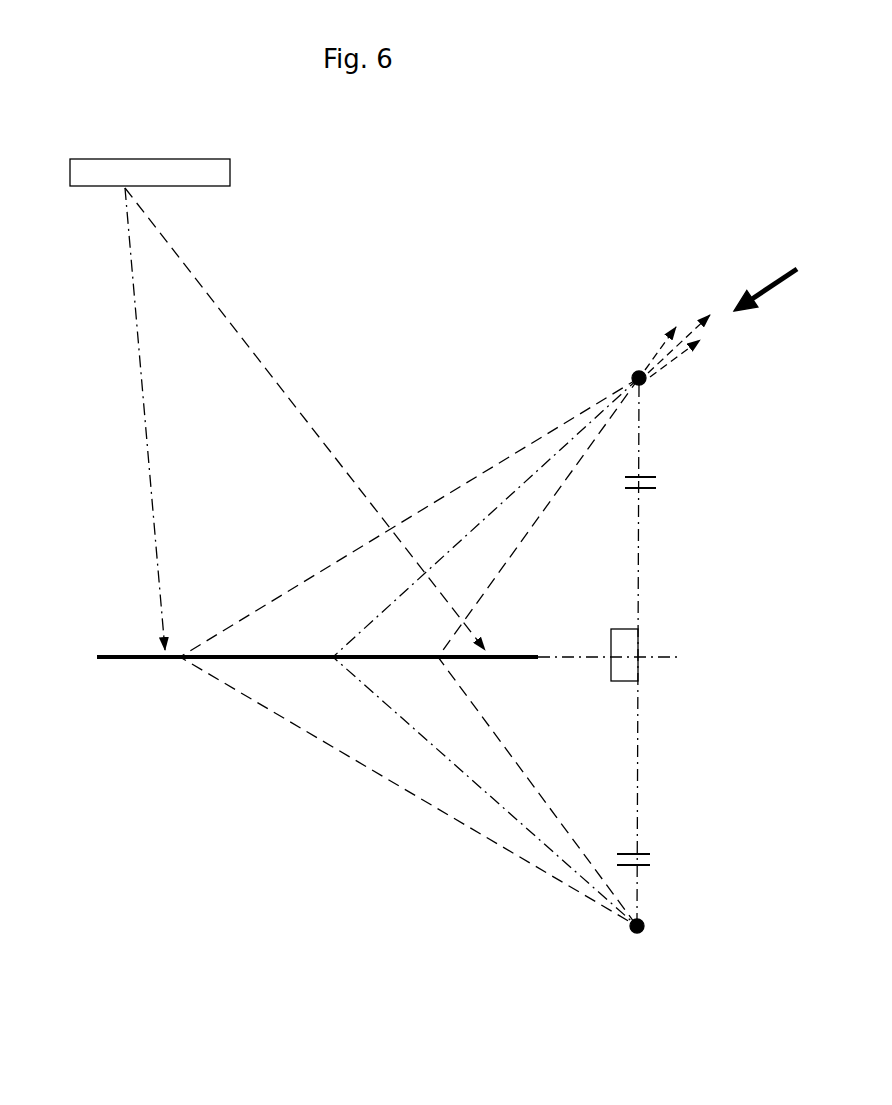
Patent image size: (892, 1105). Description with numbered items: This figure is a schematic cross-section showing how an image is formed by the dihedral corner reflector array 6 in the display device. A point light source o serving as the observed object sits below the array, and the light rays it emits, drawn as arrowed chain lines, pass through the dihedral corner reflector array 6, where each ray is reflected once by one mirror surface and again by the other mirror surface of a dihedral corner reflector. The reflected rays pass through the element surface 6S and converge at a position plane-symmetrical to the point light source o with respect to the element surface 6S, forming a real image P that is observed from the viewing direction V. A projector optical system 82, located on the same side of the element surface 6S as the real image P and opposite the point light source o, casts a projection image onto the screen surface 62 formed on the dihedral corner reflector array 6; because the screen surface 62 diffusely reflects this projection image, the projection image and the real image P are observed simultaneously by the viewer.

The projector optical system 82 is at (230, 160).
The dihedral corner reflector array 6 is at (505, 656).
The screen surface 62 is at (110, 650).
The element surface 6S is at (624, 673).
The real image position P is at (649, 383).
The point light source O is at (650, 931).
The viewing direction V is at (771, 271).